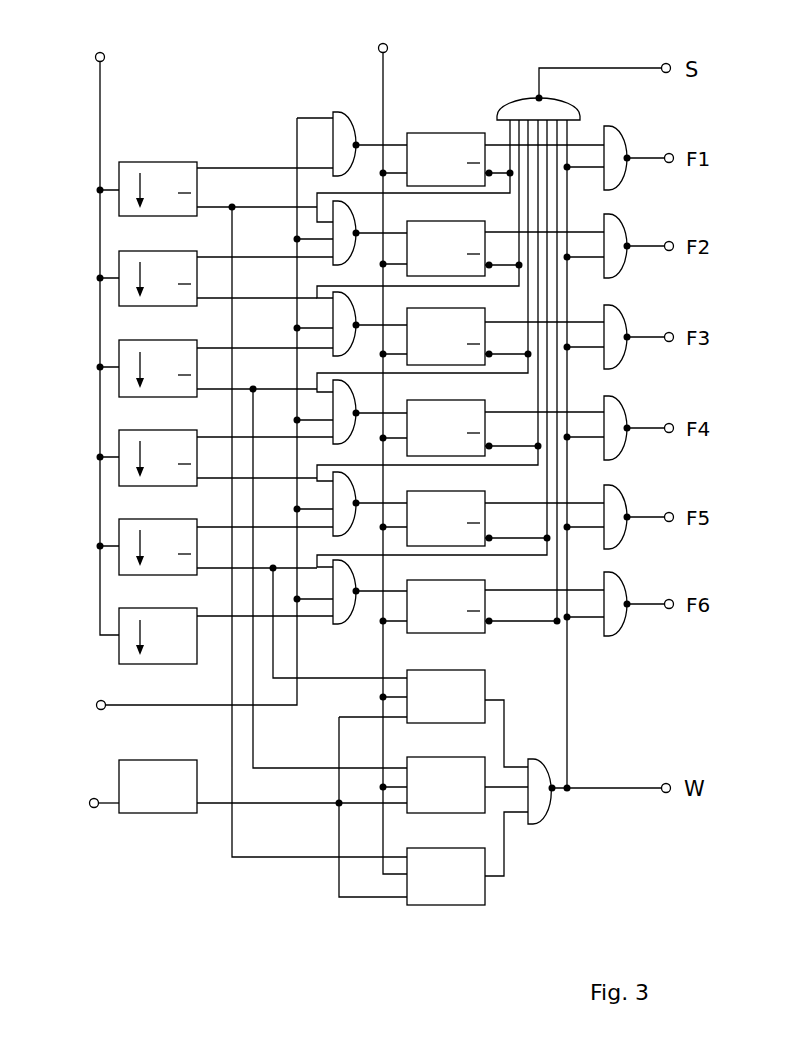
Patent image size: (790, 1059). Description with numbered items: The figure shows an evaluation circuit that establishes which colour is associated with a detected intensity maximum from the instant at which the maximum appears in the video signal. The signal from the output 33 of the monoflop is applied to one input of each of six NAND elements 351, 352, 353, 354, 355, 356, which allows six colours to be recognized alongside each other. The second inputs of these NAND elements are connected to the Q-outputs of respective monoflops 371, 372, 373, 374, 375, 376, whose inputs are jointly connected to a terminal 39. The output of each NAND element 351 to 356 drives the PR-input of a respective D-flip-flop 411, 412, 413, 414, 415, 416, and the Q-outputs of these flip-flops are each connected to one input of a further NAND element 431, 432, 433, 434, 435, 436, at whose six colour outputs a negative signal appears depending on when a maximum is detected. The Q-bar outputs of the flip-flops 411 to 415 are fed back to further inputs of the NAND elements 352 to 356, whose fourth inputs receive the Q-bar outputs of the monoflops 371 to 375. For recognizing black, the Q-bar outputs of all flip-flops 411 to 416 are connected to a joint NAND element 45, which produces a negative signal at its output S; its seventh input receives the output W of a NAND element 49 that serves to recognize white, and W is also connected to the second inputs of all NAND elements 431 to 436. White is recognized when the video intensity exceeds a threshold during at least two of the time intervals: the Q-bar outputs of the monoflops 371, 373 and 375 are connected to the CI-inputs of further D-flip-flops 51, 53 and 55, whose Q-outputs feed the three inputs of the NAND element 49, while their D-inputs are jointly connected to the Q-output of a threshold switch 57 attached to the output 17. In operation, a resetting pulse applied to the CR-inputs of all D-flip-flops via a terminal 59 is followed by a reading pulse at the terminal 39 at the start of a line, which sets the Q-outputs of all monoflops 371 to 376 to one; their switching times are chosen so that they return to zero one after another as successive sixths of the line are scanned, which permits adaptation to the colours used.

The terminal 39 is at (104, 53).
The terminal 59 is at (387, 45).
The joint NAND element 45 is at (517, 108).
The output of the monoflop 33 is at (97, 709).
The output 17 is at (91, 807).
The monoflop 371 is at (131, 166).
The monoflop 372 is at (132, 265).
The monoflop 373 is at (132, 355).
The monoflop 374 is at (132, 445).
The monoflop 375 is at (132, 534).
The monoflop 376 is at (132, 623).
The NAND element 351 is at (337, 116).
The NAND element 352 is at (338, 203).
The NAND element 353 is at (345, 270).
The NAND element 354 is at (345, 358).
The NAND element 355 is at (337, 473).
The NAND element 356 is at (346, 612).
The D-flip-flop 411 is at (443, 137).
The D-flip-flop 412 is at (443, 232).
The D-flip-flop 413 is at (443, 322).
The D-flip-flop 414 is at (443, 411).
The D-flip-flop 415 is at (446, 502).
The D-flip-flop 416 is at (446, 591).
The NAND element 431 is at (619, 140).
The NAND element 432 is at (619, 233).
The NAND element 433 is at (619, 324).
The NAND element 434 is at (619, 414).
The NAND element 435 is at (618, 500).
The NAND element 436 is at (618, 587).
The D-flip-flop 55 is at (455, 683).
The D-flip-flop 53 is at (452, 770).
The D-flip-flop 51 is at (448, 857).
The NAND element 49 is at (538, 817).
The threshold switch 57 is at (155, 804).